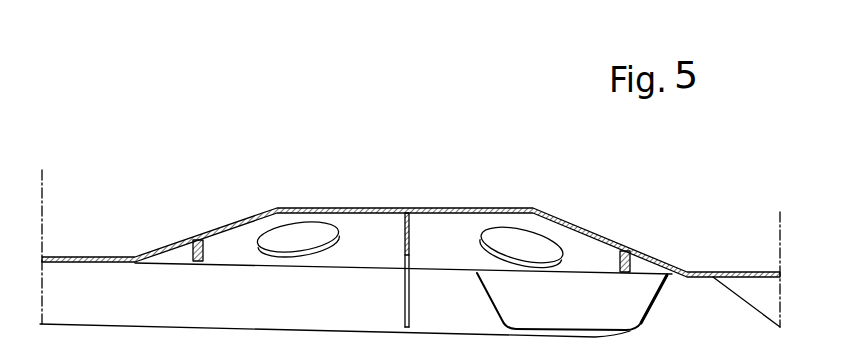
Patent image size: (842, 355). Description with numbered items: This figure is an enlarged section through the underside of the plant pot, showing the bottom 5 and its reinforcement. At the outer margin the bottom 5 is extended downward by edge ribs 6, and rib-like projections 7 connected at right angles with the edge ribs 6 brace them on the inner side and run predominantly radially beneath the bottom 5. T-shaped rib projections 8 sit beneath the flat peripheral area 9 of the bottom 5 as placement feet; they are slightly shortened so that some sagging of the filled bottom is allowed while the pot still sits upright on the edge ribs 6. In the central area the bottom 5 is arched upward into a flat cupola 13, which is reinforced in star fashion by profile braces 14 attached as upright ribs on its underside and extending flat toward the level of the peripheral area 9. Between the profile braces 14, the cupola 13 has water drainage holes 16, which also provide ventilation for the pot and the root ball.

The bottom 5 is at (665, 166).
The edge ribs 6 is at (337, 320).
The rib-like projections 7 is at (411, 297).
The rib projections 8 is at (633, 303).
The flat peripheral area 9 is at (737, 272).
The flat cupola 13 is at (224, 226).
The profile braces 14 is at (178, 248).
The water drainage holes 16 is at (506, 235).